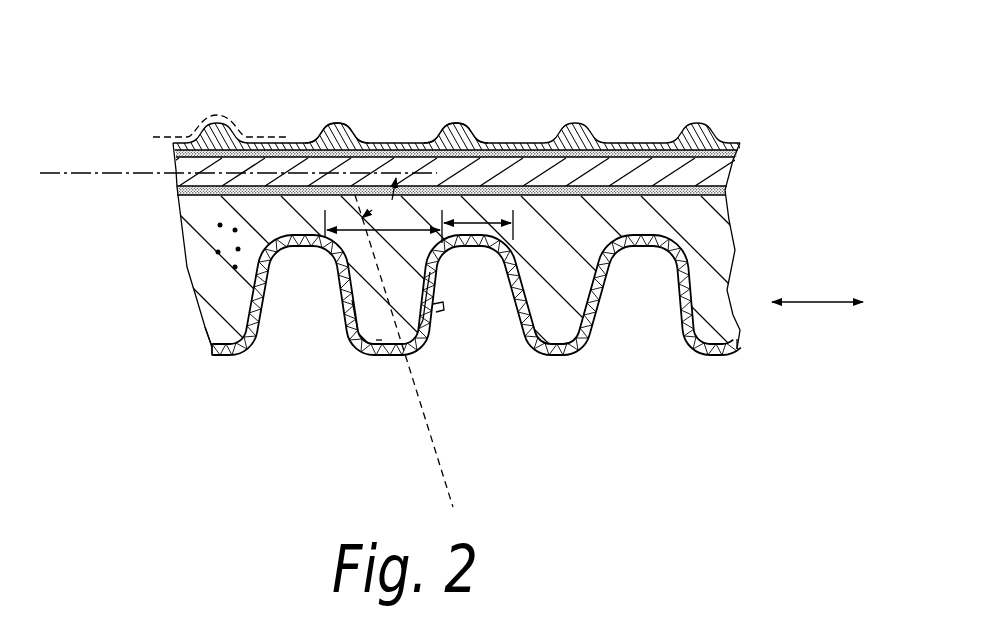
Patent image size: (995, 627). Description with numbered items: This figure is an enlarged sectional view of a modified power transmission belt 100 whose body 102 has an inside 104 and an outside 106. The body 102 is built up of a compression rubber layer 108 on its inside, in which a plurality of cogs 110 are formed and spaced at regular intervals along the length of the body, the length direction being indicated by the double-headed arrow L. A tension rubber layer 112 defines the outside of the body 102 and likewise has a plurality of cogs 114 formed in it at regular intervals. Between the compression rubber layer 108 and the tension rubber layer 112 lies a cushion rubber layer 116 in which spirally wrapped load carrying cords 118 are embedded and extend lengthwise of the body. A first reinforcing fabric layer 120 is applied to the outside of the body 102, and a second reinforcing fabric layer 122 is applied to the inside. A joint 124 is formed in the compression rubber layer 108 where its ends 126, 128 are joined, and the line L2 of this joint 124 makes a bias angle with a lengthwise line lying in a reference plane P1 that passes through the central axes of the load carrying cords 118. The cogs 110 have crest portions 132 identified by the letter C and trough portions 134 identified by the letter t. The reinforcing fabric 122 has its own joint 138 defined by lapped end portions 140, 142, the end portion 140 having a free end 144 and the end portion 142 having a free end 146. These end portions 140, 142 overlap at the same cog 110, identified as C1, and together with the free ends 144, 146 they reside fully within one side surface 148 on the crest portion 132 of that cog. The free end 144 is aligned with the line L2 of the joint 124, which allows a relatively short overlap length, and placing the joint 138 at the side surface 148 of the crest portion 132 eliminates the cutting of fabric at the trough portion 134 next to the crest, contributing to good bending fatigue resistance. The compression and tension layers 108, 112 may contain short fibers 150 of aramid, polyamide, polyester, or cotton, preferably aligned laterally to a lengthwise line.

The belt 100 is at (742, 218).
The body 102 is at (742, 258).
The inside 104 is at (530, 340).
The outside 106 is at (360, 130).
The compression rubber layer 108 is at (232, 332).
The cogs 110 is at (208, 292).
The tension rubber layer 112 is at (223, 128).
The cogs 114 is at (247, 128).
The cushion rubber layer 116 is at (529, 156).
The load carrying cords 118 is at (175, 173).
The first reinforcing fabric layer 120 is at (162, 115).
The second reinforcing fabric layer 122 is at (718, 357).
The joint 124 is at (345, 290).
The end 126 is at (396, 345).
The end 128 is at (441, 301).
The crest portions 132 is at (208, 333).
The trough portions 134 is at (490, 215).
The joint 138 is at (425, 348).
The end portion 140 is at (373, 272).
The end portion 142 is at (440, 337).
The free end 144 is at (402, 357).
The free end 146 is at (441, 320).
The side surface 148 is at (447, 262).
The short fibers 150 is at (211, 130).
The reference plane P1 is at (60, 172).
The double-headed arrow L is at (830, 303).
The line of the joint L2 is at (452, 495).
The crest portion identifier C is at (383, 233).
The cog C1 is at (378, 340).
The trough portion identifier t is at (478, 225).